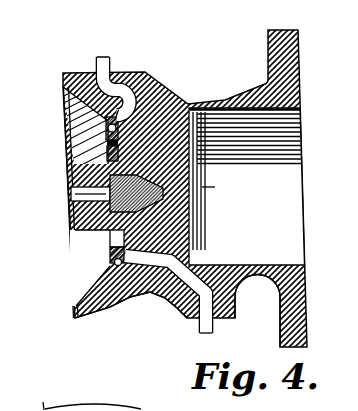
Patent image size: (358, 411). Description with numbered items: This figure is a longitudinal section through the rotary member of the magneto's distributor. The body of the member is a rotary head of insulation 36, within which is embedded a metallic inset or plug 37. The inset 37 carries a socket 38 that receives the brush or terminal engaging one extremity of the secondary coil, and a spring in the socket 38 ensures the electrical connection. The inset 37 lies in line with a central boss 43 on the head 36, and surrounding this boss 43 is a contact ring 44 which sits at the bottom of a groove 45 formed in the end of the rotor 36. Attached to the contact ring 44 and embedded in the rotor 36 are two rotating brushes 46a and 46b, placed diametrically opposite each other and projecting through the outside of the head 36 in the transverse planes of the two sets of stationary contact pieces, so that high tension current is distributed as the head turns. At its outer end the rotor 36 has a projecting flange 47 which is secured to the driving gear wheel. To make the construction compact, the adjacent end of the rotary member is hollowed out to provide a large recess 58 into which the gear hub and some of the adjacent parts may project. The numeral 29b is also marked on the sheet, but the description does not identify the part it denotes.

The rim 29b is at (92, 395).
The rotary member or head of insulation 36 is at (130, 297).
The metallic inset or plug 37 is at (202, 208).
The socket 38 is at (90, 197).
The central boss 43 is at (92, 228).
The contact ring 44 is at (107, 118).
The groove 45 is at (110, 255).
The rotating brush 46a is at (110, 60).
The rotating brush 46b is at (203, 328).
The projecting flange 47 is at (277, 296).
The recess 58 is at (202, 165).